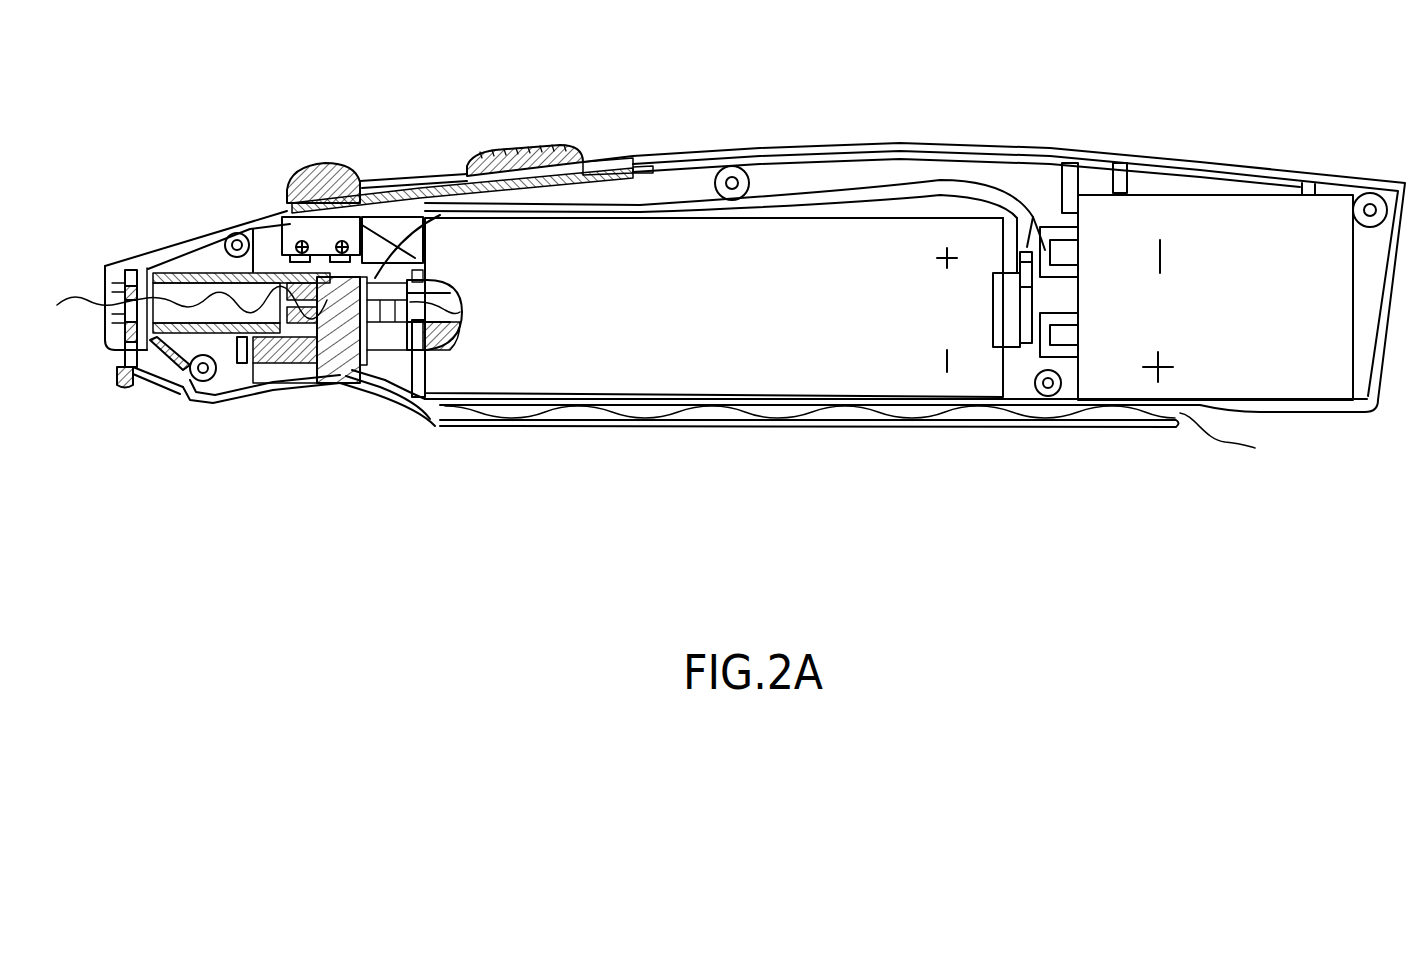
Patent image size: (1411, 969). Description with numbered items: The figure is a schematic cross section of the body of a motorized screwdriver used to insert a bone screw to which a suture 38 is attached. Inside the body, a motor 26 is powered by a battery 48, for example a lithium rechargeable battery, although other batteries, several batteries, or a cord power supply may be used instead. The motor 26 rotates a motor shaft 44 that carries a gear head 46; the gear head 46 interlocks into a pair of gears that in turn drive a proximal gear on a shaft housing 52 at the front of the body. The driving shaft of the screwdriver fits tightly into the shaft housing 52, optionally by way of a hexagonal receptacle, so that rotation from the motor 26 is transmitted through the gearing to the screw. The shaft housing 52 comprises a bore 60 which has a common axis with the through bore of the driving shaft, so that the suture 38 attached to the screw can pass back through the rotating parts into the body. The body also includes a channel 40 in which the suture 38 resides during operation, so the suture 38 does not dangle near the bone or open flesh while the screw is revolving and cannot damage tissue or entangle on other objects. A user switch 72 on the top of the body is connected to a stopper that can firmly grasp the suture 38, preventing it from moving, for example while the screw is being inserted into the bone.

The motor 26 is at (763, 328).
The suture 38 is at (857, 420).
The channel 40 is at (693, 420).
The motor shaft 44 is at (460, 315).
The gear head 46 is at (317, 288).
The battery 48 is at (1207, 197).
The shaft housing 52 is at (197, 283).
The bore 60 is at (227, 313).
The user switch 72 is at (573, 148).